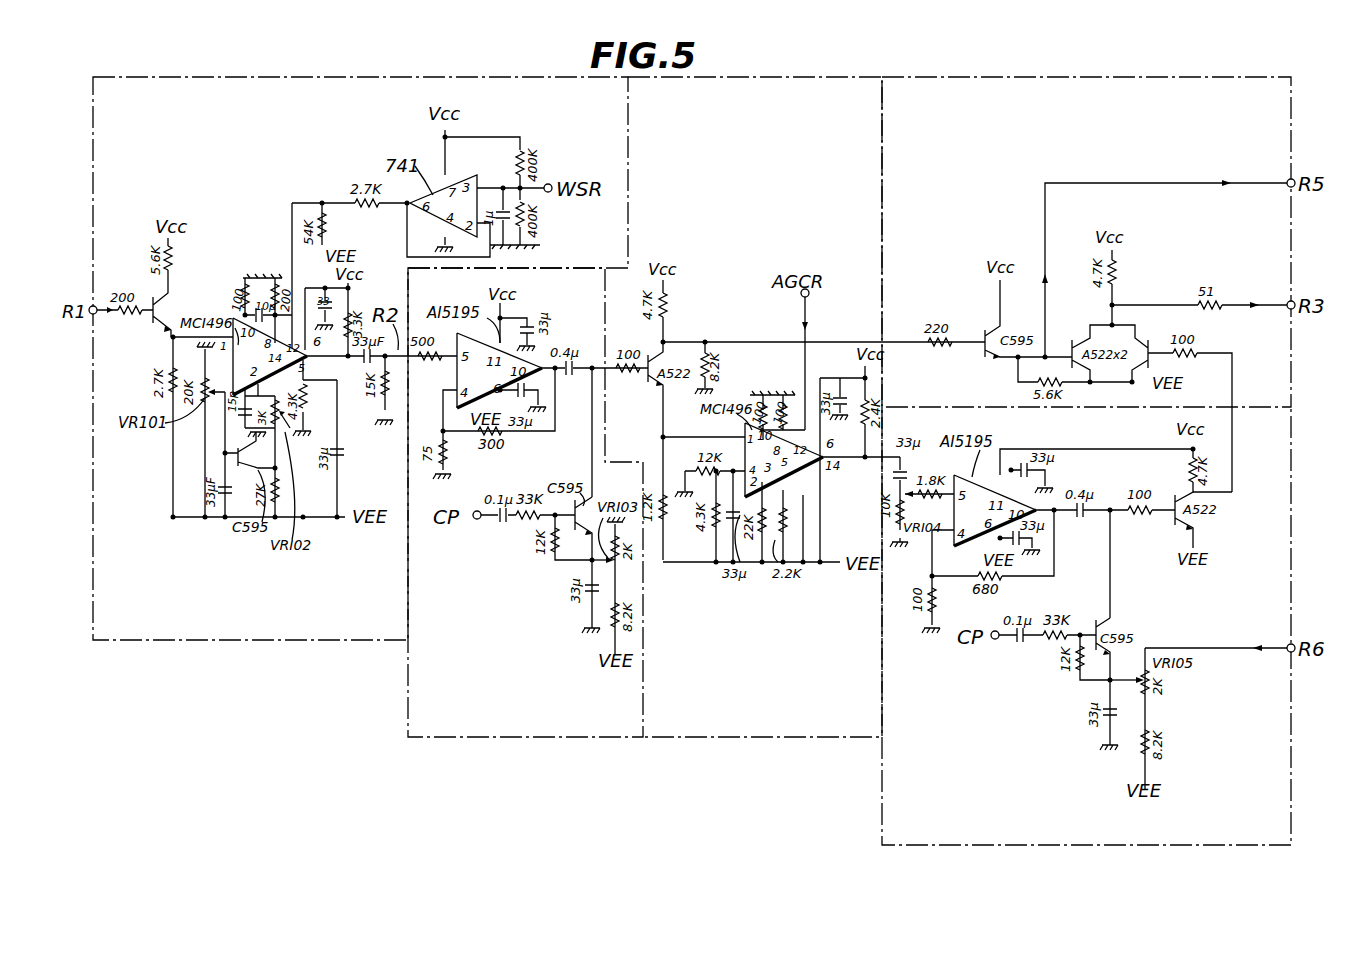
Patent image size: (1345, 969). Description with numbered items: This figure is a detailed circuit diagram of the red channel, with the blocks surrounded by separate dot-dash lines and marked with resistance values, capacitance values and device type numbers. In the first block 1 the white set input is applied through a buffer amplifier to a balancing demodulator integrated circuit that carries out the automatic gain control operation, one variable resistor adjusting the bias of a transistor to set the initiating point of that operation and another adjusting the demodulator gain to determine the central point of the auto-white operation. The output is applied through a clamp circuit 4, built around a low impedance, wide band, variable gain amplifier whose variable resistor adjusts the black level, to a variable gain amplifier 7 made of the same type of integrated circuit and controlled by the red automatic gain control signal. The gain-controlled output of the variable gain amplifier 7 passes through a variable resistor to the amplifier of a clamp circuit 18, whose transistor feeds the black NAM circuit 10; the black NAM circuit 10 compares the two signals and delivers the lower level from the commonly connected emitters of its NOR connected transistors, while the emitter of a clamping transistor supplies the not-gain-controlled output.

The red channel AGC circuit 1 is at (495, 77).
The clamp circuit 4 is at (408, 682).
The variable gain amplifier 7 is at (768, 77).
The black NAM circuit 10 is at (985, 77).
The clamp circuit 18 is at (882, 790).